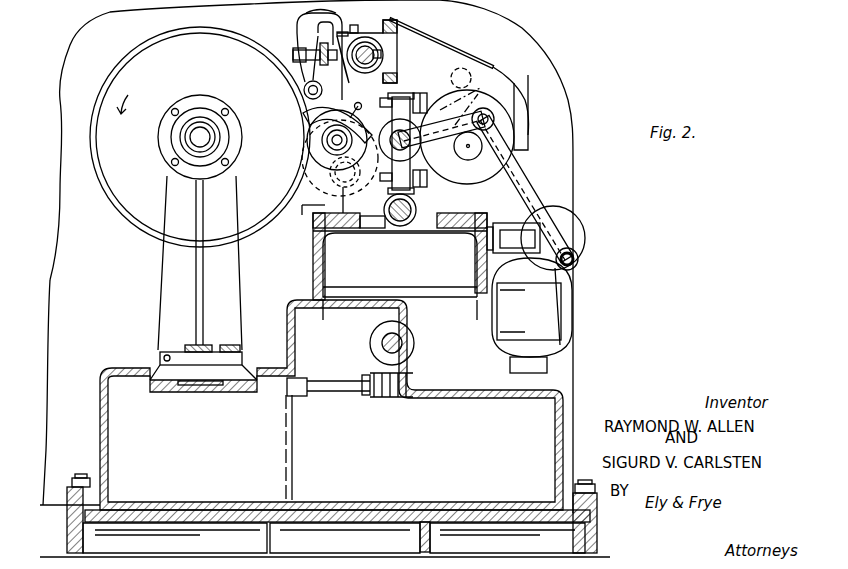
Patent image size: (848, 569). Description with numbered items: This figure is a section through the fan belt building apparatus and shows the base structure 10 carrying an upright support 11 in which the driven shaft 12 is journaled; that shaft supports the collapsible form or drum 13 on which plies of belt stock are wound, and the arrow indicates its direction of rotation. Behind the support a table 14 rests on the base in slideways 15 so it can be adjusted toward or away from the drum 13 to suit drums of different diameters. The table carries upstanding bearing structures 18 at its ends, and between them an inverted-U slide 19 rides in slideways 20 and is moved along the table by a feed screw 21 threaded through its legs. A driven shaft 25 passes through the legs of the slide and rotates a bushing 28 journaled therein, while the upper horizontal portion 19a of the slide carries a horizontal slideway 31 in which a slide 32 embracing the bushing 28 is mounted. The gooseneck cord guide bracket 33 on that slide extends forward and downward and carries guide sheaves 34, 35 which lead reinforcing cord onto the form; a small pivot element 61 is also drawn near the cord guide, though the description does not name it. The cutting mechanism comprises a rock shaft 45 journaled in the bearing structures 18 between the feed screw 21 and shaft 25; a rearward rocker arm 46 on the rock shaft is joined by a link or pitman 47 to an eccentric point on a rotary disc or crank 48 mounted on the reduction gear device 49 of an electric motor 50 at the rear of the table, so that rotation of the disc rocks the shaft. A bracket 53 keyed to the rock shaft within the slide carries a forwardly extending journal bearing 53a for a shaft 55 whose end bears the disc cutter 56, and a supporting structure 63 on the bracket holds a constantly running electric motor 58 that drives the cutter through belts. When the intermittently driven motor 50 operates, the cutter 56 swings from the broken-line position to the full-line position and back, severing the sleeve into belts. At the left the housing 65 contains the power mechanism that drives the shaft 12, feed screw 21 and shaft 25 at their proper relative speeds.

The base structure 10 is at (568, 436).
The upright support 11 is at (167, 283).
The driven shaft 12 is at (188, 140).
The collapsible form or drum 13 is at (102, 147).
The table 14 is at (313, 250).
The slideways 15 is at (287, 280).
The bearing structure 18 is at (313, 206).
The slide 19 is at (367, 225).
The horizontal portion 19a is at (425, 33).
The slideways 20 is at (347, 224).
The feed screw 21 is at (398, 222).
The driven shaft 25 is at (373, 50).
The bushing 28 is at (381, 58).
The horizontal slideway 31 is at (399, 28).
The slide 32 is at (370, 75).
The cord guide bracket 33 is at (300, 13).
The guide sheave 34 is at (300, 20).
The guide sheave 35 is at (305, 83).
The rock shaft 45 is at (413, 147).
The rocker arm 46 is at (468, 118).
The link or pitman 47 is at (537, 188).
The rotary disc or crank 48 is at (583, 231).
The reduction gear device 49 is at (588, 246).
The electric motor 50 is at (567, 302).
The bracket 53 is at (405, 93).
The journal bearing 53a is at (350, 176).
The shaft 55 is at (332, 140).
The disc cutter 56 is at (318, 122).
The electric motor 58 is at (512, 125).
The pivot pin 61 is at (356, 103).
The supporting structure 63 is at (417, 187).
The housing 65 is at (523, 50).